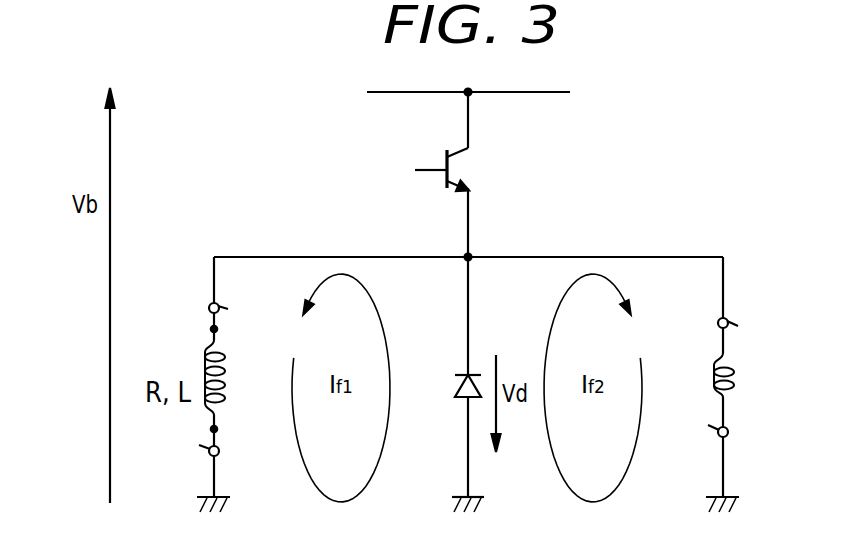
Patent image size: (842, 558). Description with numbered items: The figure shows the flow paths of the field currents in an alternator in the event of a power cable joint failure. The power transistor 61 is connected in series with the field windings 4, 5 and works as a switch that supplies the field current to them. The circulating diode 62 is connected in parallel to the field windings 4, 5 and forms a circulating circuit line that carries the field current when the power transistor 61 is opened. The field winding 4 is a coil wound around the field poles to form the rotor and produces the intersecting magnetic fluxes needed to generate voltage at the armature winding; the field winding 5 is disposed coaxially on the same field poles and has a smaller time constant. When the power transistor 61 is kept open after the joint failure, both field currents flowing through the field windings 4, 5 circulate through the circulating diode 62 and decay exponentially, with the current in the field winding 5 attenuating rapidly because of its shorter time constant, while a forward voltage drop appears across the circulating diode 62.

The field winding 4 is at (199, 365).
The field winding 5 is at (709, 364).
The power transistor 61 is at (471, 171).
The circulating diode 62 is at (462, 373).